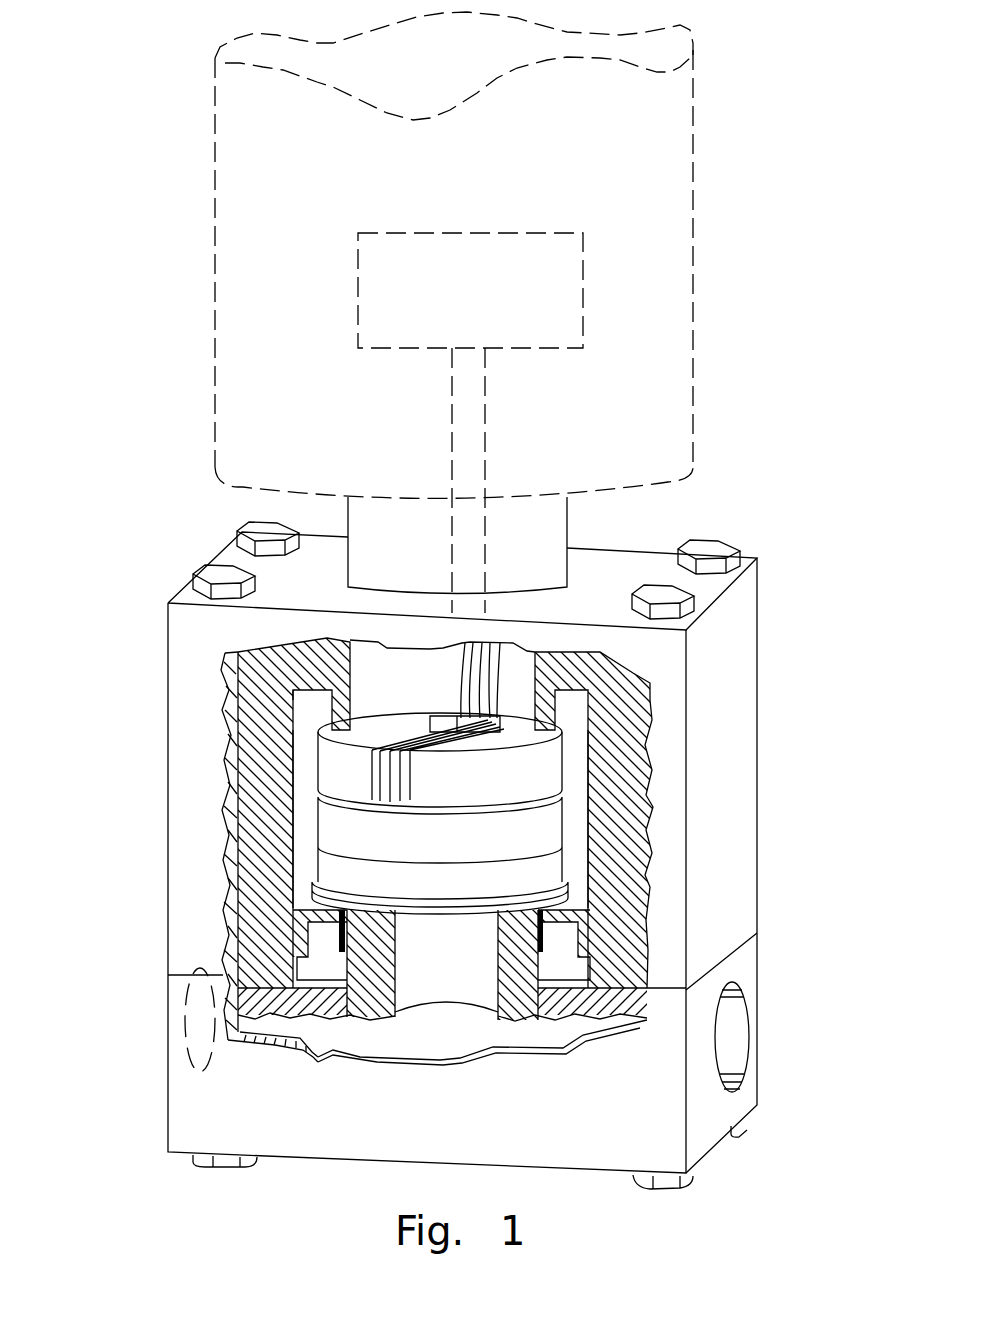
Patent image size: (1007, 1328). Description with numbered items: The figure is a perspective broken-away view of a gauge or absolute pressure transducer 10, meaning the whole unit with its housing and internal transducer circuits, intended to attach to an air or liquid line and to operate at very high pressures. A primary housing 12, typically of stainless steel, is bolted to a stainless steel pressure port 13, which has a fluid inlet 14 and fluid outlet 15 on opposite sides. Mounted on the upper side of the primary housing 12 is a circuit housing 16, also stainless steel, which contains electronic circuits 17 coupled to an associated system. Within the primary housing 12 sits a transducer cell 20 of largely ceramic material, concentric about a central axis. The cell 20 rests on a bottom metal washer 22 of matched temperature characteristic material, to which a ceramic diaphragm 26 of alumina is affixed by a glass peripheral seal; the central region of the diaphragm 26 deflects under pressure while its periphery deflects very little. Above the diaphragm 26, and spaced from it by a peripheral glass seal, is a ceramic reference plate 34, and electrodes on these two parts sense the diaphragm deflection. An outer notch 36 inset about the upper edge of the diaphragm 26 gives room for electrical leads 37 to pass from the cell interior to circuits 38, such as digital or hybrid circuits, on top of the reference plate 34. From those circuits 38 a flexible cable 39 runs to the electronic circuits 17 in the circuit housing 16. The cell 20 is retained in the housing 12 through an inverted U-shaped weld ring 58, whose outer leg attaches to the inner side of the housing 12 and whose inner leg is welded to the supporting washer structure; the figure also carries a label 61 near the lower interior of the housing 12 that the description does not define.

The pressure transducer 10 is at (482, 600).
The primary housing 12 is at (758, 772).
The pressure port 13 is at (754, 1088).
The fluid inlet 14 is at (175, 1009).
The fluid outlet 15 is at (731, 1036).
The circuit housing 16 is at (695, 177).
The electronic circuits 17 is at (583, 290).
The transducer cell 20 is at (472, 805).
The metal washer 22 is at (317, 868).
The ceramic diaphragm 26 is at (327, 833).
The reference plate 34 is at (318, 768).
The outer notch 36 is at (590, 807).
The electrical leads 37 is at (377, 780).
The circuits 38 is at (347, 710).
The flexible cable 39 is at (500, 690).
The weld ring 58 is at (775, 932).
The support pillar 61 is at (370, 938).